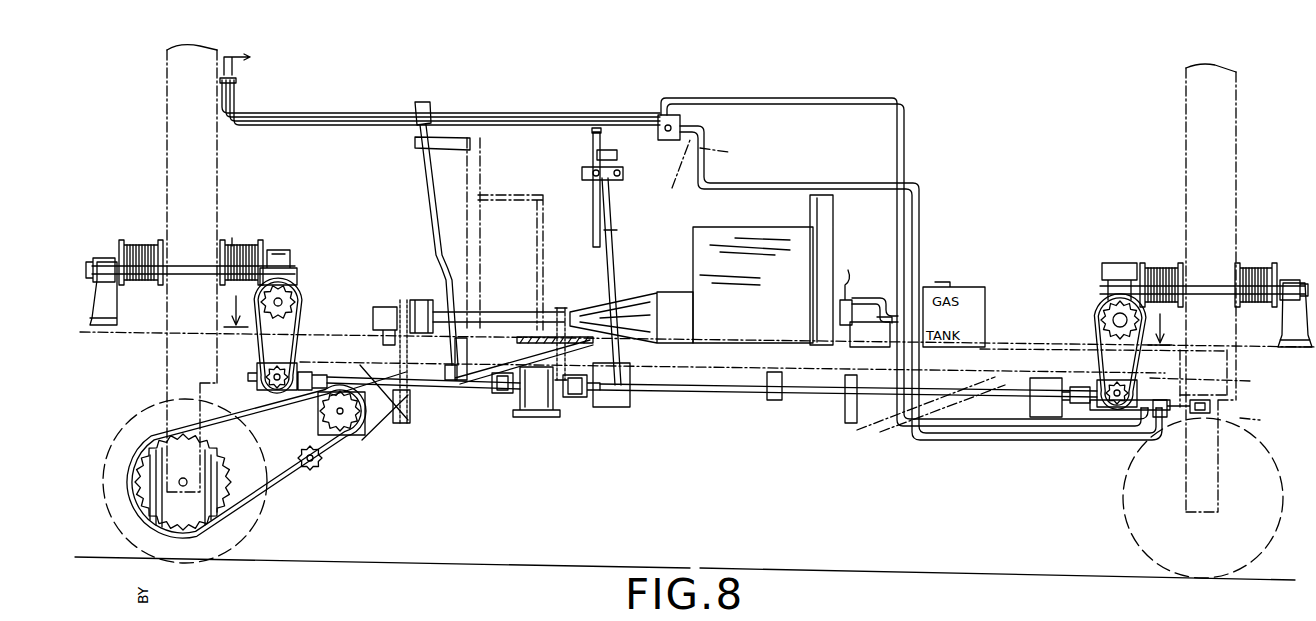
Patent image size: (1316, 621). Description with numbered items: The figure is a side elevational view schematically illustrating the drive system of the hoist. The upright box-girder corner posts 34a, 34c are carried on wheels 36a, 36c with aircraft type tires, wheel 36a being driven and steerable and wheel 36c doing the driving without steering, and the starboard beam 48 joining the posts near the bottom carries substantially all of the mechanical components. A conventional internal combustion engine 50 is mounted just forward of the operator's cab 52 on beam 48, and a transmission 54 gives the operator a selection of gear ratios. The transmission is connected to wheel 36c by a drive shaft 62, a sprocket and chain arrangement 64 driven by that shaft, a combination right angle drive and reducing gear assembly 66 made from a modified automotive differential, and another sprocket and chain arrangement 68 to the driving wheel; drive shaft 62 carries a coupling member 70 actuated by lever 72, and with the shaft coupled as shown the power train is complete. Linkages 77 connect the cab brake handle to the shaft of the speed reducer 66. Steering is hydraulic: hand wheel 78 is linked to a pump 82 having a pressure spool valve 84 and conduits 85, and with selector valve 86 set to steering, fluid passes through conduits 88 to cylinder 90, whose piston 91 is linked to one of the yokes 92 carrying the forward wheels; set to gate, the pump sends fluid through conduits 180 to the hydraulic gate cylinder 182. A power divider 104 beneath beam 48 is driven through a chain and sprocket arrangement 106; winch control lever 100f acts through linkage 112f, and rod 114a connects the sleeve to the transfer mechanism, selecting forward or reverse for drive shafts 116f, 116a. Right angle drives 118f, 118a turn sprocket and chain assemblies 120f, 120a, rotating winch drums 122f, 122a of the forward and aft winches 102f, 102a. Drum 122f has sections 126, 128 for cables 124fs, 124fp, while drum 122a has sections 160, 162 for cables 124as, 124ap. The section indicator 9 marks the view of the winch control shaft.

The hydraulic gate cylinder 182 is at (329, 63).
The corner post 34c is at (168, 355).
The corner post 34a is at (1235, 143).
The wheel 36c is at (243, 530).
The wheel 36a is at (1128, 532).
The sprocket and chain arrangement 68 is at (268, 476).
The right angle drive and reducing gear assembly 66 is at (362, 425).
The aft winch 102a is at (207, 238).
The forward winch 102f is at (1227, 259).
The port side aft cable 124ap is at (138, 238).
The aft cable 124as is at (240, 238).
The forward starboard cable 124fs is at (1158, 262).
The forward port cable 124fp is at (1275, 215).
The winch drum section 160 is at (232, 238).
The winch drum section 162 is at (160, 281).
The winch drum 122a is at (276, 239).
The winch drum 122f is at (1293, 255).
The sprocket and chain assembly 120a is at (305, 289).
The sprocket and chain assembly 120f is at (1087, 323).
The right angle drive 118a is at (262, 388).
The right angle drive 118f is at (1100, 385).
The section line 9 is at (697, 320).
The drive shaft 116a is at (490, 394).
The drive shaft 116f is at (712, 393).
The sprocket and chain arrangement 64 is at (400, 305).
The coupling member 70 is at (418, 298).
The drive shaft 62 is at (498, 312).
The lever 72 is at (430, 200).
The linkages 77 is at (512, 355).
The chain and sprocket arrangement 106 is at (563, 306).
The rod 114a is at (590, 366).
The power divider 104 is at (535, 418).
The transmission 54 is at (637, 303).
The internal combustion engine 50 is at (782, 230).
The pump 82 is at (858, 340).
The pressure spool valve 84 is at (848, 284).
The hand wheel 78 is at (591, 140).
The winch control lever 100f is at (606, 195).
The linkage 112f is at (614, 233).
The operator's cab 52 is at (700, 158).
The conduits 180 is at (506, 124).
The selector valve 86 is at (662, 115).
The conduits 85 is at (773, 102).
The conduits 88 is at (782, 183).
The beam 48 is at (645, 395).
The winch drum section 126 is at (1175, 262).
The winch drum section 128 is at (1265, 300).
The piston 91 is at (1172, 420).
The cylinder 90 is at (1133, 428).
The yoke 92 is at (1222, 421).